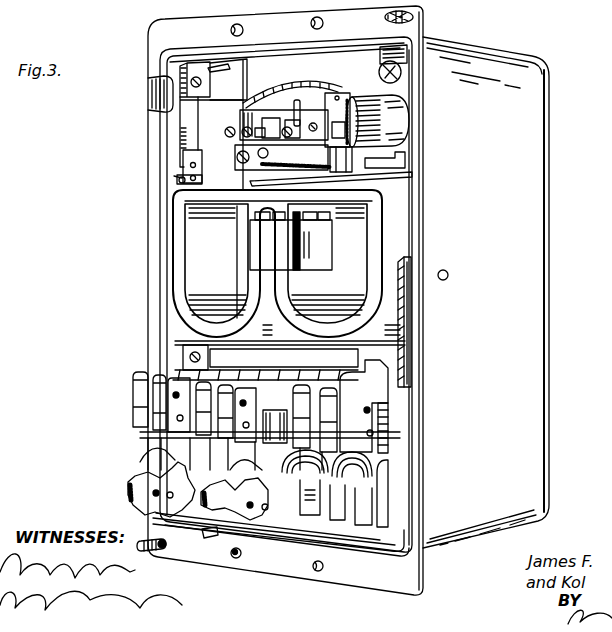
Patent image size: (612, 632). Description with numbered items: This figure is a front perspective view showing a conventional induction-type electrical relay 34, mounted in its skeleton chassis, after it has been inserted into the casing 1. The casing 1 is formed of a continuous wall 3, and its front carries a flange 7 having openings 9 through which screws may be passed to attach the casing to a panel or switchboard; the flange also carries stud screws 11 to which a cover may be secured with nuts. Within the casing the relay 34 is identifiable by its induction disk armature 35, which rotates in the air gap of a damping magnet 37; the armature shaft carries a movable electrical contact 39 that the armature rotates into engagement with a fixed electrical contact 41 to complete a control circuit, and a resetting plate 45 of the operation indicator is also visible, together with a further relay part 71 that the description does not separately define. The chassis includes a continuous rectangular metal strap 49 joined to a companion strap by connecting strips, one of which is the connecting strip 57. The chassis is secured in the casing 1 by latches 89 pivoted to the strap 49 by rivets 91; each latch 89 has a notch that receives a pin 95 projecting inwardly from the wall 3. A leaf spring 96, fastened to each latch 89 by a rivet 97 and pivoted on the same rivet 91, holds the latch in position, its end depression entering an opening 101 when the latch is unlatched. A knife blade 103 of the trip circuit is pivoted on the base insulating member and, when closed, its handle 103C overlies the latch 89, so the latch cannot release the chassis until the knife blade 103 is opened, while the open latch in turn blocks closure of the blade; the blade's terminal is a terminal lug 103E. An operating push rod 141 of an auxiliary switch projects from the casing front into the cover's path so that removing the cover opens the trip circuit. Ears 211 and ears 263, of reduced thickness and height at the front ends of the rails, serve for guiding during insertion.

The casing 1 is at (529, 407).
The wall 3 is at (165, 300).
The flange 7 is at (298, 571).
The openings 9 is at (241, 558).
The stud screws 11 is at (413, 18).
The electrical relay 34 is at (362, 256).
The induction disk armature 35 is at (247, 210).
The damping magnet 37 is at (175, 243).
The movable electrical contact 39 is at (318, 110).
The fixed electrical contact 41 is at (275, 133).
The resetting plate 45 is at (330, 174).
The strap 49 is at (190, 120).
The connecting strip 57 is at (220, 66).
The plate 71 is at (250, 82).
The latches 89 is at (148, 92).
The rivets 91 is at (199, 180).
The pins 95 is at (449, 279).
The leaf spring 96 is at (178, 181).
The rivet 97 is at (180, 177).
The opening 101 is at (196, 166).
The knife blade 103 is at (399, 463).
The handle 103C is at (347, 366).
The terminal lug 103E is at (373, 507).
The operating push rod 141 is at (203, 535).
The ears 211 is at (404, 523).
The ears 263 is at (399, 428).